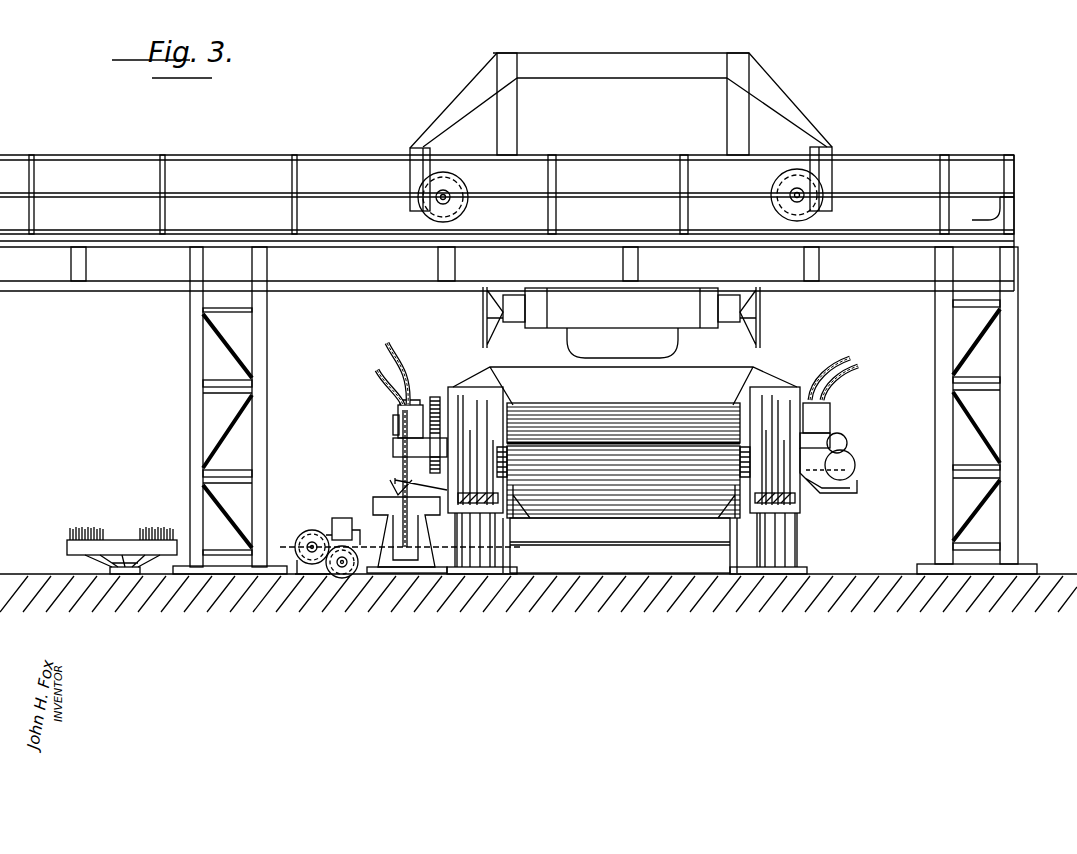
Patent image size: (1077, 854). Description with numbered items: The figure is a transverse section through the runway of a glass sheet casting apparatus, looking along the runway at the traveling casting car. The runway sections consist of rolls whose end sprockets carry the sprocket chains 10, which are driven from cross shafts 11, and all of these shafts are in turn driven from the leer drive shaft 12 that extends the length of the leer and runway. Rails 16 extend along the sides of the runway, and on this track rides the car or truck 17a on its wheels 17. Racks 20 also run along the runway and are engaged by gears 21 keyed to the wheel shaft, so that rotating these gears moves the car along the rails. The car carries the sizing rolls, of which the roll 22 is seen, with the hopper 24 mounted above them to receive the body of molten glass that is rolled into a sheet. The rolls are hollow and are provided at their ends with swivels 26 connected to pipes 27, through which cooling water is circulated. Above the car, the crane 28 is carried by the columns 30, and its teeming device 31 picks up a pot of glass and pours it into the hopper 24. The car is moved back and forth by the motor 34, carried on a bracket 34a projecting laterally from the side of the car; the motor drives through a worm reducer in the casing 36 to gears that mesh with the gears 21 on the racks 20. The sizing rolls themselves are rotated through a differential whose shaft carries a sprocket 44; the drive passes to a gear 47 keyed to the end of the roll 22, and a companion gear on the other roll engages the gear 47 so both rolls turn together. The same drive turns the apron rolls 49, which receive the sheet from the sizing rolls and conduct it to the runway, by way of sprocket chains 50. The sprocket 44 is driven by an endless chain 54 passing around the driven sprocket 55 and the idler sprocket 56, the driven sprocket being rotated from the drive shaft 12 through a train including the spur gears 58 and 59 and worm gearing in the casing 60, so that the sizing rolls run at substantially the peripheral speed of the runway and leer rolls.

The sprocket chains 10 is at (520, 540).
The cross shafts 11 is at (610, 545).
The leer drive shaft 12 is at (312, 549).
The rails 16 is at (478, 560).
The wheels 17 is at (480, 387).
The car or truck 17a is at (812, 400).
The racks 20 is at (460, 555).
The gears 21 is at (460, 397).
The sizing roll 22 is at (693, 405).
The hopper 24 is at (537, 370).
The swivels 26 is at (408, 410).
The pipes 27 is at (387, 345).
The crane 28 is at (750, 70).
The columns 30 is at (190, 325).
The teeming device 31 is at (621, 322).
The motor 34 is at (855, 465).
The bracket 34a is at (858, 493).
The casing 36 is at (845, 440).
The sprocket 44 is at (405, 467).
The gear 47 is at (435, 397).
The rolls 49 is at (648, 495).
The sprocket chains 50 is at (560, 505).
The endless chain 54 is at (403, 418).
The driven sprocket 55 is at (395, 481).
The idler sprocket 56 is at (730, 505).
The spur gear 58 is at (306, 531).
The spur gear 59 is at (343, 580).
The casing 60 is at (342, 518).